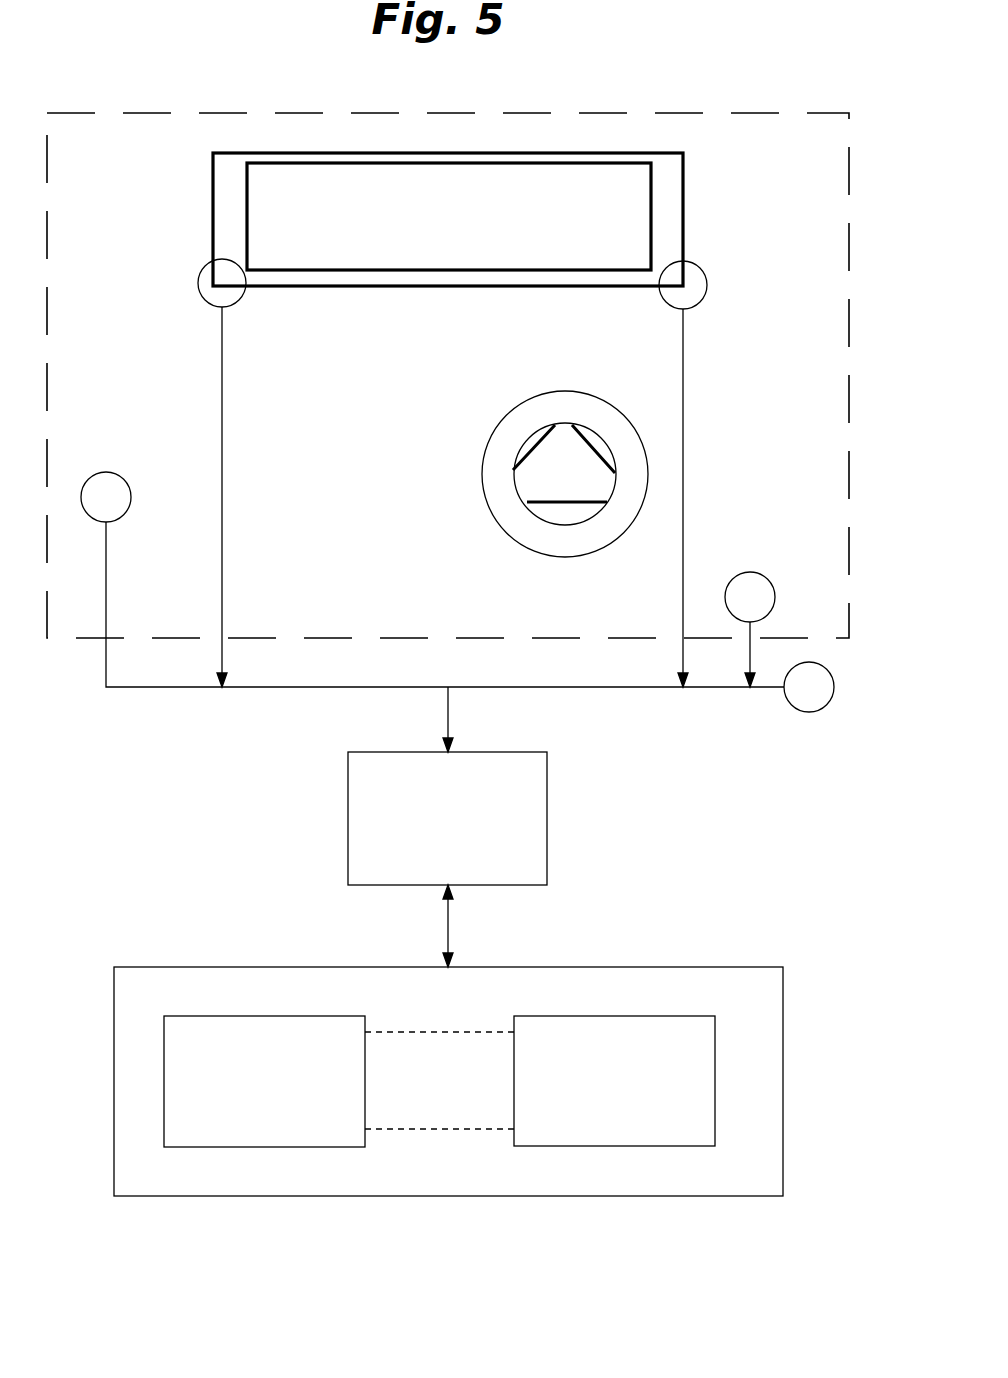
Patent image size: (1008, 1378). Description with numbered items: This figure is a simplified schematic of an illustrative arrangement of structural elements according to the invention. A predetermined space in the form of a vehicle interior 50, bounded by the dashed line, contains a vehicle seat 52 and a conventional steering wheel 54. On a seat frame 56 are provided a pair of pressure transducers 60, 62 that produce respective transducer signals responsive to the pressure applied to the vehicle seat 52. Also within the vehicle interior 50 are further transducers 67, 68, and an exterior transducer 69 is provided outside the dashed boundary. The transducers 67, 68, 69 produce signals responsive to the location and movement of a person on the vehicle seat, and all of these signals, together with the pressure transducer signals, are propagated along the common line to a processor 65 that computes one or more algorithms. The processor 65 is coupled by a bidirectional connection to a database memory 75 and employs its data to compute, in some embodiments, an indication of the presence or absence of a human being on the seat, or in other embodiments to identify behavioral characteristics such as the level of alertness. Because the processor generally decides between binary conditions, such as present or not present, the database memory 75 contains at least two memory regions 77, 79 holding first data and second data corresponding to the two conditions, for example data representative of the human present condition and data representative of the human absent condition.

The vehicle interior 50 is at (122, 136).
The vehicle seat 52 is at (536, 243).
The steering wheel 54 is at (497, 452).
The seat frame 56 is at (378, 287).
The pressure transducer 60 is at (218, 293).
The pressure transducer 62 is at (694, 297).
The processor 65 is at (527, 823).
The transducer 67 is at (102, 497).
The transducer 68 is at (740, 588).
The exterior transducer 69 is at (813, 700).
The database memory 75 is at (490, 990).
The memory region 77 is at (217, 1042).
The memory region 79 is at (628, 1033).